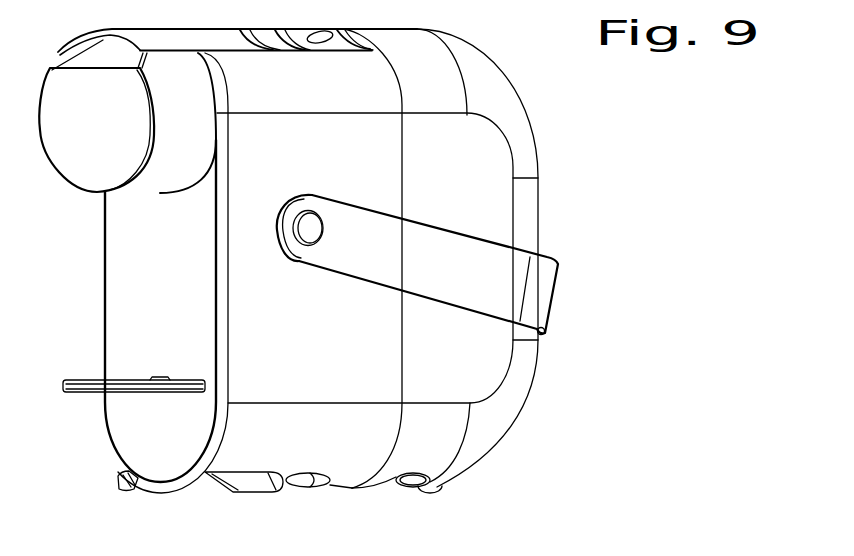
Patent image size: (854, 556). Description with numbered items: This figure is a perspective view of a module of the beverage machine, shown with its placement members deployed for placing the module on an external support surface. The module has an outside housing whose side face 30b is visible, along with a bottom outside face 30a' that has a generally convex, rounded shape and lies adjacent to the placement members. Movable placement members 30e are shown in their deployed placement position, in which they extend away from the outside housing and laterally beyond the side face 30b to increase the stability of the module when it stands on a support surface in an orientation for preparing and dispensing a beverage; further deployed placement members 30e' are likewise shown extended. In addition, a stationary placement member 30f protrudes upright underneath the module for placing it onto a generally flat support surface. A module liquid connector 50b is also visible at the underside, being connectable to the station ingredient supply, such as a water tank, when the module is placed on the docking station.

The bottom outside face 30a' is at (173, 273).
The side face 30b is at (233, 278).
The movable placement member 30e is at (165, 492).
The support foot 30e' is at (199, 509).
The module liquid connector 50b is at (400, 483).
The stationary placement member 30f is at (438, 488).